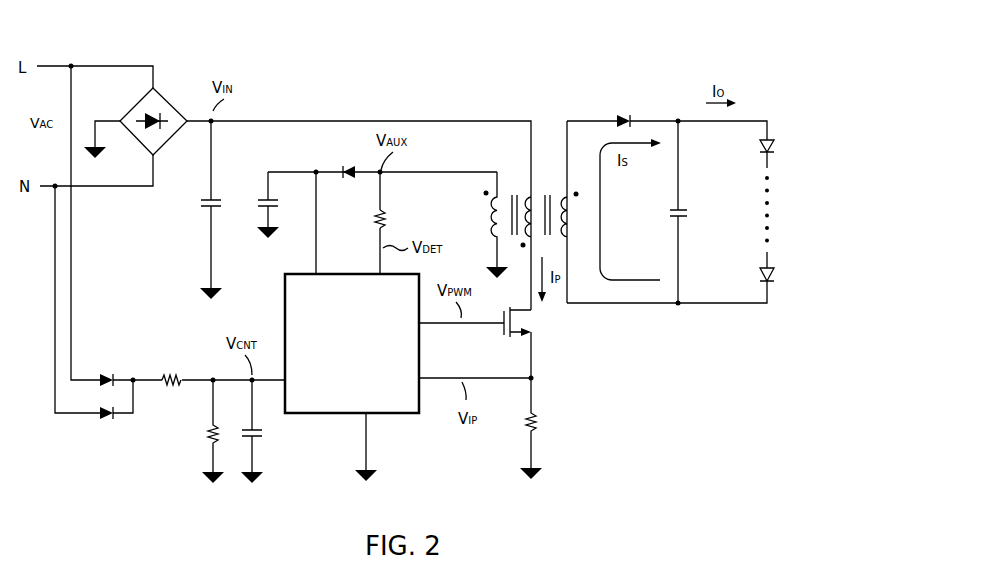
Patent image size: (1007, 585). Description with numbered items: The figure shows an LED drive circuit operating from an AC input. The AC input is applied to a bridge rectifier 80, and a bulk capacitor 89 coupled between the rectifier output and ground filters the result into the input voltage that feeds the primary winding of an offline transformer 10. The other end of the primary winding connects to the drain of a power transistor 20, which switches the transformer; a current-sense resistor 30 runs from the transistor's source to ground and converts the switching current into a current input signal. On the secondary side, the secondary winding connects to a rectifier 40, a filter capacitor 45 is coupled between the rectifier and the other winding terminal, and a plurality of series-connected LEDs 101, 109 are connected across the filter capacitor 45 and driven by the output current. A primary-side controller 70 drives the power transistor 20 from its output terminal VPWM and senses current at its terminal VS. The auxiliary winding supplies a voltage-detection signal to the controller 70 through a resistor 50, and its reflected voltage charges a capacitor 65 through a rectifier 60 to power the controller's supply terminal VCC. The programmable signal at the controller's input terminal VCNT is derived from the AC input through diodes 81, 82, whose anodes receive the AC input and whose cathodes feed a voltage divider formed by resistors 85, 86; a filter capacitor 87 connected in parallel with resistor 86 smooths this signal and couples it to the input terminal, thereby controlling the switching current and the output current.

The offline transformer 10 is at (545, 192).
The power transistor 20 is at (491, 342).
The current-sense resistor 30 is at (543, 428).
The rectifier 40 is at (621, 109).
The filter capacitor 45 is at (693, 212).
The resistor 50 is at (395, 219).
The rectifier 60 is at (348, 161).
The capacitor 65 is at (261, 205).
The controller 70 is at (352, 366).
The bridge rectifier 80 is at (154, 118).
The diode 81 is at (106, 368).
The diode 82 is at (106, 428).
The resistor 85 is at (172, 367).
The resistor 86 is at (203, 431).
The filter capacitor 87 is at (265, 431).
The bulk capacitor 89 is at (200, 210).
The LED 101 is at (749, 153).
The LED 109 is at (749, 271).